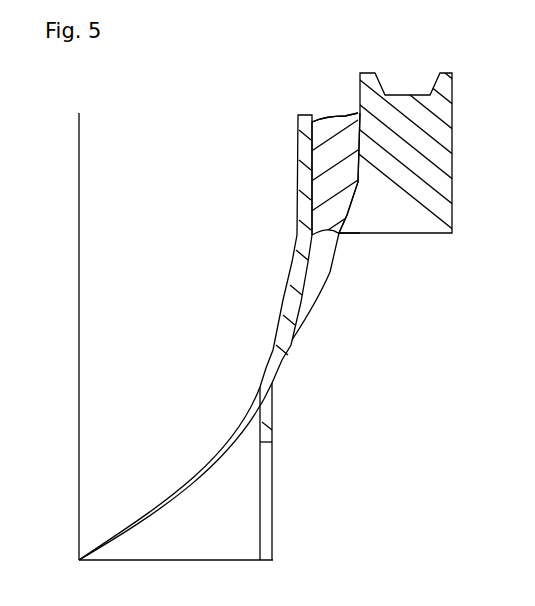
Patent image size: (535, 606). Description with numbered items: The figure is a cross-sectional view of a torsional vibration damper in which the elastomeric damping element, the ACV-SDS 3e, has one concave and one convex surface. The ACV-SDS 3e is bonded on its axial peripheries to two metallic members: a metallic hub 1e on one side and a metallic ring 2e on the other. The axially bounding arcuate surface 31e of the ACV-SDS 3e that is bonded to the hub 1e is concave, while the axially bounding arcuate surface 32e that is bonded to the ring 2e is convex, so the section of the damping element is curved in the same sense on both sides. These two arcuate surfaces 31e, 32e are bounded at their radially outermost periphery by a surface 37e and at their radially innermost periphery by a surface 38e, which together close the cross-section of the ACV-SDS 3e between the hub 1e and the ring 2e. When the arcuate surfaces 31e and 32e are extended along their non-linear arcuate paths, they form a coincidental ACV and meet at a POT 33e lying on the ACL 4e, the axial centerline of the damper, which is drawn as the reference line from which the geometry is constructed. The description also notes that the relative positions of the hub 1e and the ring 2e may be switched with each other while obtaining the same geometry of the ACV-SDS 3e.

The metallic hub 1e is at (268, 403).
The metallic ring 2e is at (424, 214).
The ACV-SDS 3e is at (330, 147).
The axially bounding arcuate surface of ACV-SDS 31e is at (313, 168).
The axially bounding arcuate surface of ACV-SDS 32e is at (351, 183).
The POT 33e is at (79, 560).
The surface 37e is at (342, 120).
The surface 38e is at (332, 228).
The ACL 4e is at (160, 560).